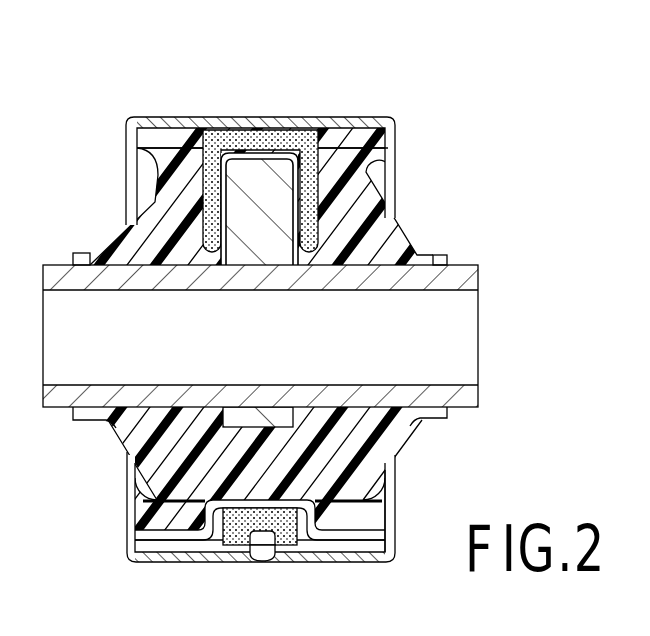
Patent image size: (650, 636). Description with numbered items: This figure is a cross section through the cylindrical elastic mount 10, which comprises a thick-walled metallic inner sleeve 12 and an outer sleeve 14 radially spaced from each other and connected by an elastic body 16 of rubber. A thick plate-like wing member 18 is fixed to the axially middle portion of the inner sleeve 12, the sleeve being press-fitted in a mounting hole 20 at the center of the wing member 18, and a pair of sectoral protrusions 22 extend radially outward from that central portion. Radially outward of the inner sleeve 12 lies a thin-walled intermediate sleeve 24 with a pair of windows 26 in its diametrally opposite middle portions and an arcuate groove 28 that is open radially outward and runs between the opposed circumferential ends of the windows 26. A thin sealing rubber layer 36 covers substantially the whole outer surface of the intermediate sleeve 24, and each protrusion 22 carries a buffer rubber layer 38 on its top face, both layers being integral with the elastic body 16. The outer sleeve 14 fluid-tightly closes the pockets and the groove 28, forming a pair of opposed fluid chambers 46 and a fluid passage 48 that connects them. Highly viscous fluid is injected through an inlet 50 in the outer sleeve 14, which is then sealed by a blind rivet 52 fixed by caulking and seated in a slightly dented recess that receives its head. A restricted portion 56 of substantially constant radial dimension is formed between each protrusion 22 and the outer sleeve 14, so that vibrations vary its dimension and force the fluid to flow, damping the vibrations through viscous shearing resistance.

The cylindrical elastic mount 10 is at (410, 68).
The inner sleeve 12 is at (433, 280).
The outer sleeve 14 is at (188, 123).
The elastic body 16 is at (105, 462).
The wing member 18 is at (272, 456).
The mounting hole 20 is at (281, 262).
The sectoral protrusion 22 is at (279, 163).
The intermediate sleeve 24 is at (172, 535).
The window 26 is at (324, 130).
The arcuate groove 28 is at (310, 547).
The sealing rubber layer 36 is at (353, 548).
The buffer rubber layer 38 is at (227, 133).
The fluid chamber 46 is at (322, 204).
The fluid passage 48 is at (237, 535).
The inlet 50 is at (265, 558).
The blind rivet 52 is at (257, 560).
The restricted portion 56 is at (259, 140).